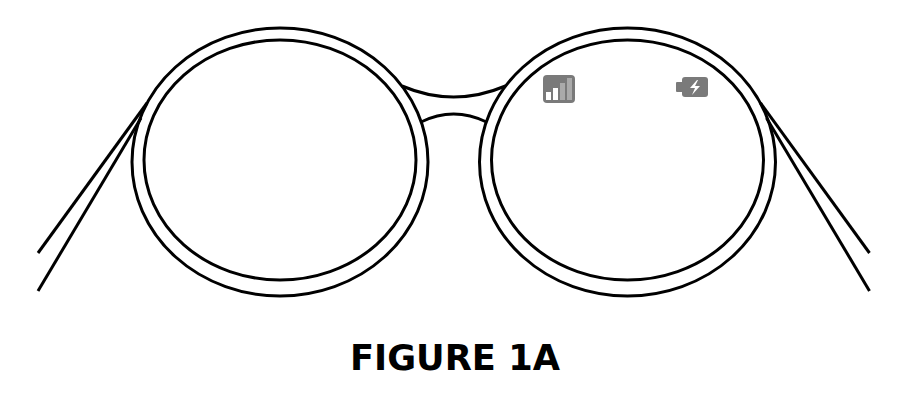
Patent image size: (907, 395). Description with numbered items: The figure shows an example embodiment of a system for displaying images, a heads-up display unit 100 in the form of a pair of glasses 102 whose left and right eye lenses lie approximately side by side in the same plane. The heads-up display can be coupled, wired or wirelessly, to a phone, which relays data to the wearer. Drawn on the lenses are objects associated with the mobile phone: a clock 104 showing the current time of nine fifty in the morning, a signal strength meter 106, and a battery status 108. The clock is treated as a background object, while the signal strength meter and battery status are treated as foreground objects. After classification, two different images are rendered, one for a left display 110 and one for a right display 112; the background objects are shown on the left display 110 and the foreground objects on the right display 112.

The wearable computing device (eyeglasses) 100 is at (95, 65).
The frame 102 is at (373, 268).
The time display 104 is at (259, 80).
The signal strength indicator 106 is at (559, 104).
The battery indicator 108 is at (699, 98).
The left display 110 is at (282, 279).
The right lens / display 112 is at (640, 282).